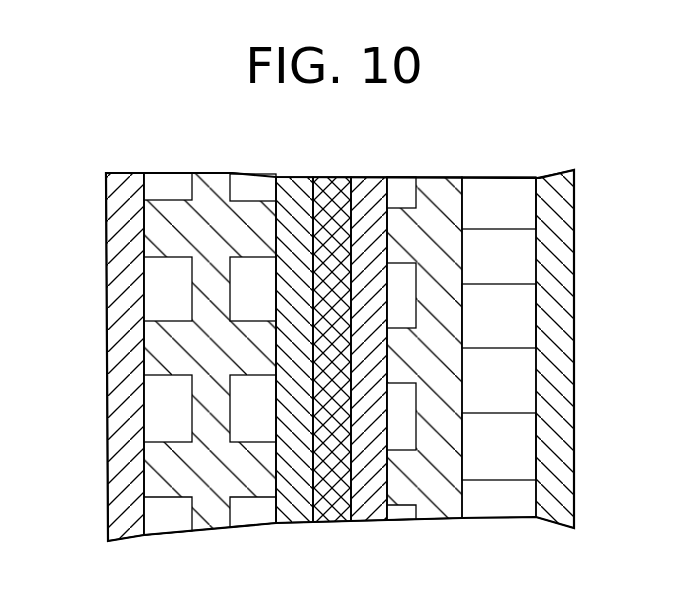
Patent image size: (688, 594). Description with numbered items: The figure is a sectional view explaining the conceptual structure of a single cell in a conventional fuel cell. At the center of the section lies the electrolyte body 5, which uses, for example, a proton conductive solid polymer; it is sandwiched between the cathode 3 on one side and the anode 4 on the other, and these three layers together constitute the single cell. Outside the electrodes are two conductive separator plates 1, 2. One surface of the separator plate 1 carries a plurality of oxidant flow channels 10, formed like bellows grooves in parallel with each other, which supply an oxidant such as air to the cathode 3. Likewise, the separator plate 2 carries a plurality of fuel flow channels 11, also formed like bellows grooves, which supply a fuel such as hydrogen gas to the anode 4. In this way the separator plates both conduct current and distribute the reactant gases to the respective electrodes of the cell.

The conductive separator plate 1 is at (216, 184).
The conductive separator plate 2 is at (436, 190).
The cathode 3 is at (296, 510).
The anode 4 is at (375, 510).
The electrolyte body 5 is at (333, 500).
The oxidant flow channels 10 is at (248, 296).
The fuel flow channels 11 is at (402, 303).